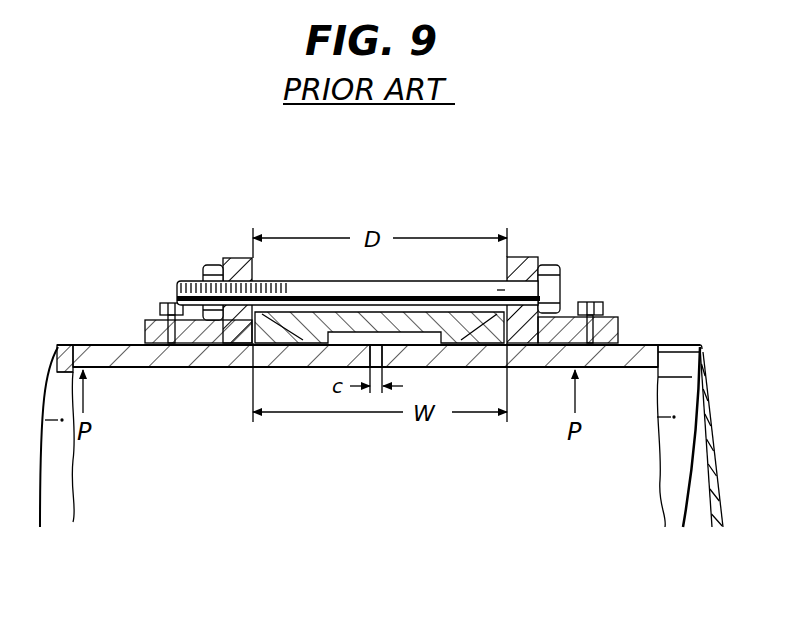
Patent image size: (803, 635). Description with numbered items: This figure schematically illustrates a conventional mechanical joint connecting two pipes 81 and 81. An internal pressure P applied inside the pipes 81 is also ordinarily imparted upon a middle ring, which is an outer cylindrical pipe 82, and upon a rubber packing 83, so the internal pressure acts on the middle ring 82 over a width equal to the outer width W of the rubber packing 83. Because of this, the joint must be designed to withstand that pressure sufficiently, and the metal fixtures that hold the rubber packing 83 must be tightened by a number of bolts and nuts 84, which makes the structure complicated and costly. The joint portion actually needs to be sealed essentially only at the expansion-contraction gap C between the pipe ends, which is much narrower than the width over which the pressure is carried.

The pipe 81 is at (641, 352).
The middle ring 82 is at (337, 316).
The rubber packing 83 is at (259, 366).
The bolts and nuts 84 is at (438, 280).